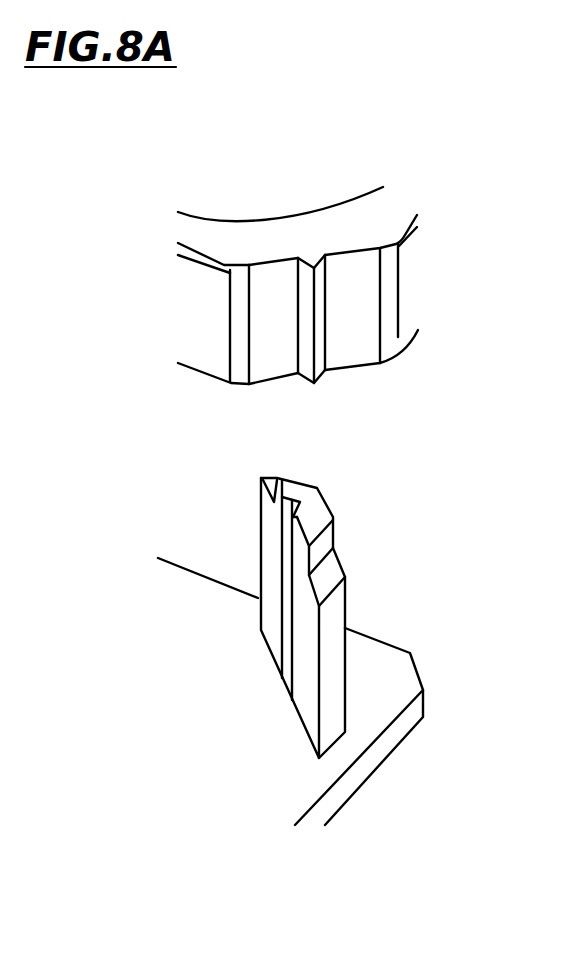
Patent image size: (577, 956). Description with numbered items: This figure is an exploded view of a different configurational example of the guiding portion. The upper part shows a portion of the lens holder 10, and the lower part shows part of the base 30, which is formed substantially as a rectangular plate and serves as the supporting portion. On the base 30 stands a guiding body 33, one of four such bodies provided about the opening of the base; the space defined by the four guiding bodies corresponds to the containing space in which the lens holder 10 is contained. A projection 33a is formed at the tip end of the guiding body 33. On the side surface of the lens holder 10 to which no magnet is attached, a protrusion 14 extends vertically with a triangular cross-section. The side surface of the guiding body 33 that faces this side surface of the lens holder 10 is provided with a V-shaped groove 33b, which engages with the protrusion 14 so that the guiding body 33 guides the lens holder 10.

The lens holder 10 is at (350, 259).
The protrusion 14 is at (327, 317).
The base 30 is at (393, 687).
The guiding body 33 is at (316, 588).
The projection 33a is at (313, 517).
The V-shaped groove 33b is at (287, 583).